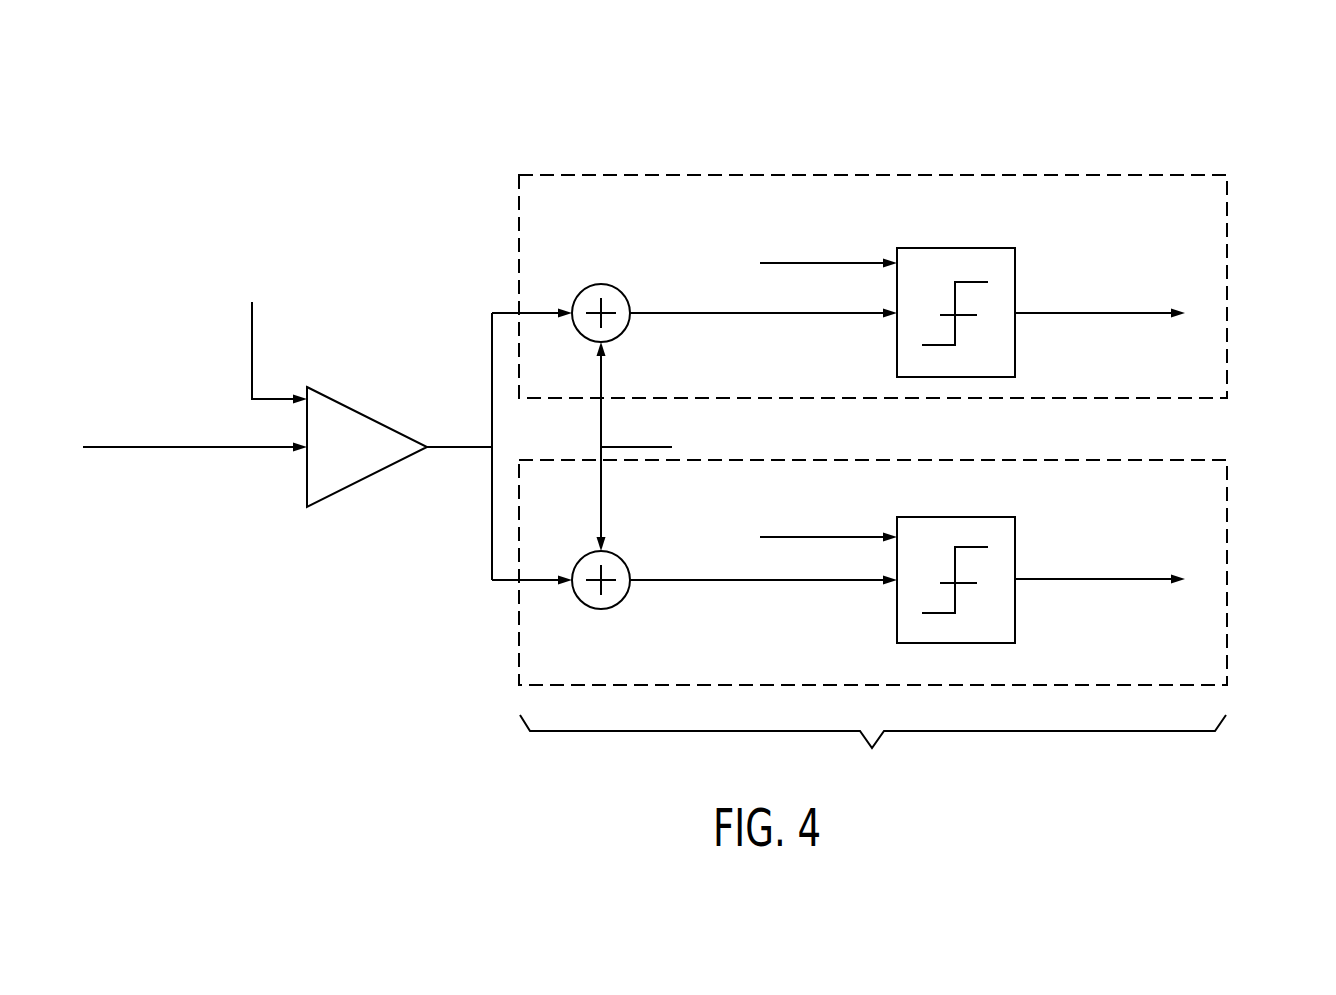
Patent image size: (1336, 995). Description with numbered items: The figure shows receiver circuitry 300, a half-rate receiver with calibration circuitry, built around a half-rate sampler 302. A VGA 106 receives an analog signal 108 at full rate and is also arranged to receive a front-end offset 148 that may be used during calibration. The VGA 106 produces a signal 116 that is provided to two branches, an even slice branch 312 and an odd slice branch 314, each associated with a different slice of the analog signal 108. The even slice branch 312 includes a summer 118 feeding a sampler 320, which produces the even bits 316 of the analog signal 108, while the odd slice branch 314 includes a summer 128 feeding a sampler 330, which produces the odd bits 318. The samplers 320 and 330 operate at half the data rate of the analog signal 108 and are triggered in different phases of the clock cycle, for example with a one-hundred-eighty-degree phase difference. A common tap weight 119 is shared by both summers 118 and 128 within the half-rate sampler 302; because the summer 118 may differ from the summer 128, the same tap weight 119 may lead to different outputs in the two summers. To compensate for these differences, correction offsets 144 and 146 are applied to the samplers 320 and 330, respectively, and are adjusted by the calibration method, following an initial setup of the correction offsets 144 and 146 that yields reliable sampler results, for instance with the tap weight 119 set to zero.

The receiver circuitry 300 is at (404, 107).
The analog signal 108 is at (188, 450).
The front-end offset 148 is at (252, 350).
The VGA 106 is at (327, 500).
The signal 116 is at (458, 445).
The even slice branch 312 is at (1227, 225).
The summer 118 is at (621, 335).
The correction offset 144 is at (820, 265).
The sampler 320 is at (955, 248).
The even bits 316 is at (1092, 314).
The tap weight 119 is at (637, 447).
The odd slice branch 314 is at (1227, 572).
The summer 128 is at (621, 557).
The correction offset 146 is at (820, 538).
The sampler 330 is at (955, 643).
The odd bits 318 is at (1092, 580).
The half-rate sampler 302 is at (873, 750).